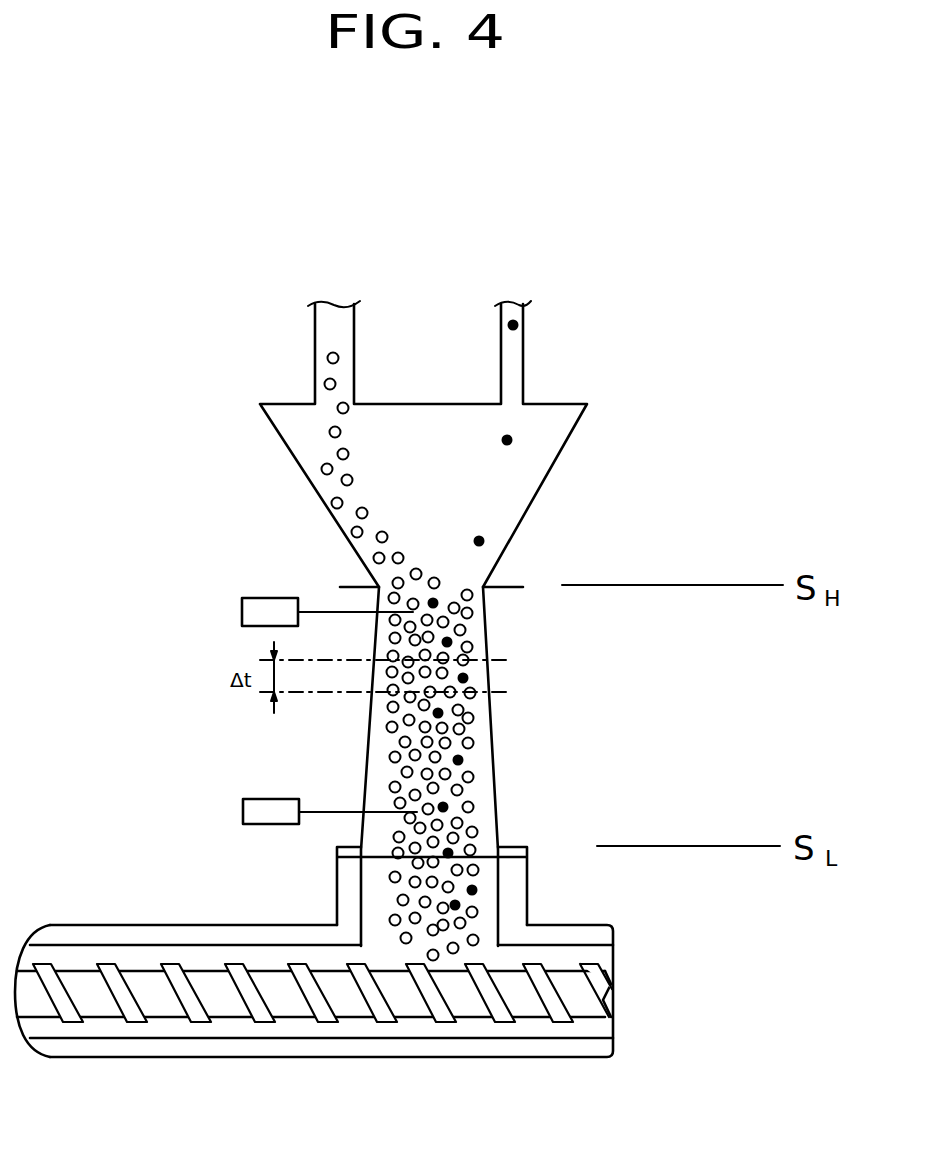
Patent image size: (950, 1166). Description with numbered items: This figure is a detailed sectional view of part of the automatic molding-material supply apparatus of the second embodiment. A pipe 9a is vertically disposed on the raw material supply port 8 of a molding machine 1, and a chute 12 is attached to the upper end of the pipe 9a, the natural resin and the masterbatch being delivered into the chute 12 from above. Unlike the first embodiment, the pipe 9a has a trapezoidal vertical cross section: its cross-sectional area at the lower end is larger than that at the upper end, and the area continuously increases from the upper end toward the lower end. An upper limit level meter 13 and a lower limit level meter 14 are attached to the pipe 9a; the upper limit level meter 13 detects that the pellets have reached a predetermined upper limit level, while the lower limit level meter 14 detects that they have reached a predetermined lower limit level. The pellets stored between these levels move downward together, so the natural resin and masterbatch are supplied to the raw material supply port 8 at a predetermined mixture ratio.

The molding machine 1 is at (128, 925).
The raw material supply port 8 is at (477, 890).
The pipe 9a is at (497, 768).
The chute 12 is at (302, 468).
The upper limit level meter 13 is at (242, 612).
The lower limit level meter 14 is at (275, 799).